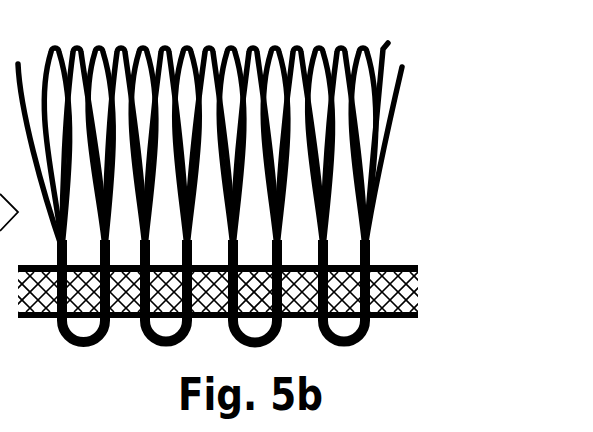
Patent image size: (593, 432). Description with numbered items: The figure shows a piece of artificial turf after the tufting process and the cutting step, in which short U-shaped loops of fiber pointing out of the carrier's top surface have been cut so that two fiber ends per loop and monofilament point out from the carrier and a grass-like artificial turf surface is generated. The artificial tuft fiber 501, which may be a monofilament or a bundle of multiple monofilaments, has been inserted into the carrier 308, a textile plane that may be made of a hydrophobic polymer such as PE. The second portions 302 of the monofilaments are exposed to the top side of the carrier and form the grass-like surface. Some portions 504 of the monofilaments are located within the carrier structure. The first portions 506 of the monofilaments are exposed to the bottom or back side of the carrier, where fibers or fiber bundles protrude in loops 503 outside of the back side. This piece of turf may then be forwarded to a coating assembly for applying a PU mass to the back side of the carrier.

The artificial tuft fiber 501 is at (422, 264).
The second portions of the monofilaments 302 is at (254, 132).
The portions of the monofilaments located within the carrier structure 504 is at (249, 292).
The carrier 308 is at (420, 270).
The first portions of the monofilaments 506 is at (249, 314).
The loops 503 is at (78, 344).